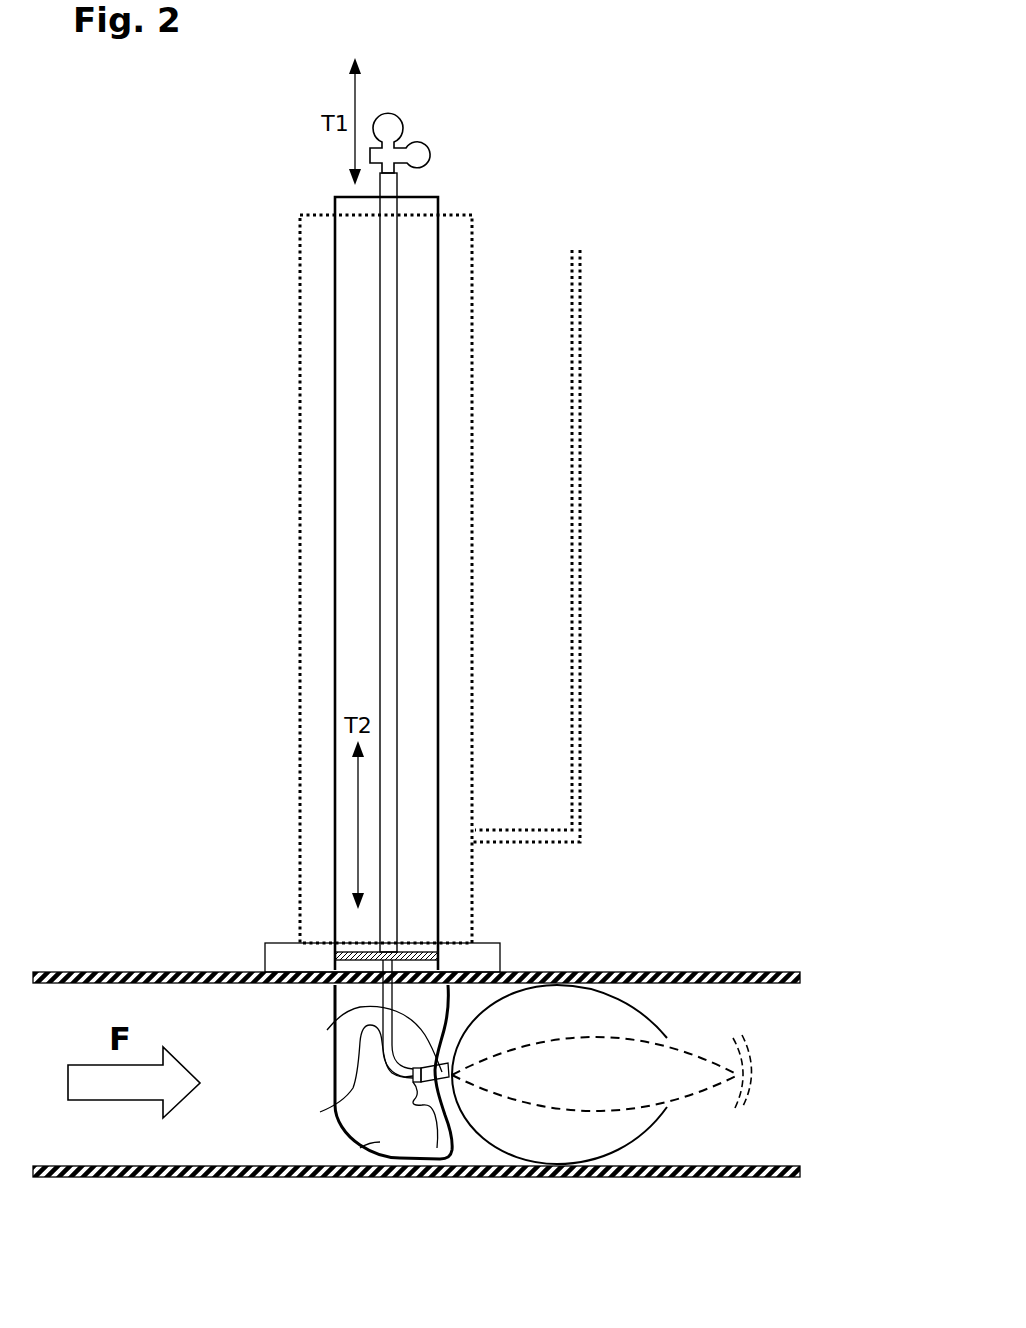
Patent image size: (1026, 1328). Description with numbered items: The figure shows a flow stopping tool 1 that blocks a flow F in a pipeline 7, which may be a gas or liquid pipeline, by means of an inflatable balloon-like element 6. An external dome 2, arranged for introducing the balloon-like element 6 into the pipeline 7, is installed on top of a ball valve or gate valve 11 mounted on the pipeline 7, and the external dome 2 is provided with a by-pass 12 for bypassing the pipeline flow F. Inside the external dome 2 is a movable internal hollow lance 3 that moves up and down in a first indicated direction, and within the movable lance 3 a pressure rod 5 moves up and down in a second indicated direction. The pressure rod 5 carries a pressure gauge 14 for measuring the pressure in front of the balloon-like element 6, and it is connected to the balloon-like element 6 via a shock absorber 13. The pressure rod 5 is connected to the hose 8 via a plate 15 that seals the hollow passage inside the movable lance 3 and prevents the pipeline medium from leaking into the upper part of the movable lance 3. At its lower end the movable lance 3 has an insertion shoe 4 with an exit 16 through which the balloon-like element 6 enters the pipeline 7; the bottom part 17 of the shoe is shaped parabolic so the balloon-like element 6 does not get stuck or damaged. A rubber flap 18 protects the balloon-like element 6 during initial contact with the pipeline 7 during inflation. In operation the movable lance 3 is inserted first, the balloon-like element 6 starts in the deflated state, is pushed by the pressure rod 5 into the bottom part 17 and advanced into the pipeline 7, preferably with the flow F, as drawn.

The flow stopping tool 1 is at (252, 170).
The external dome 2 is at (475, 250).
The movable internal hollow lance 3 is at (441, 420).
The insertion shoe 4 is at (432, 1142).
The pressure rod 5 is at (390, 317).
The balloon-like element 6 is at (605, 1130).
The pipeline 7 is at (650, 971).
The hose 8 is at (320, 1112).
The ball valve or gate valve 11 is at (265, 957).
The by-pass 12 is at (583, 295).
The shock absorber 13 is at (453, 1138).
The pressure gauge 14 is at (418, 127).
The plate 15 is at (440, 957).
The exit 16 is at (327, 1030).
The bottom part 17 is at (368, 1148).
The flap 18 is at (740, 1040).